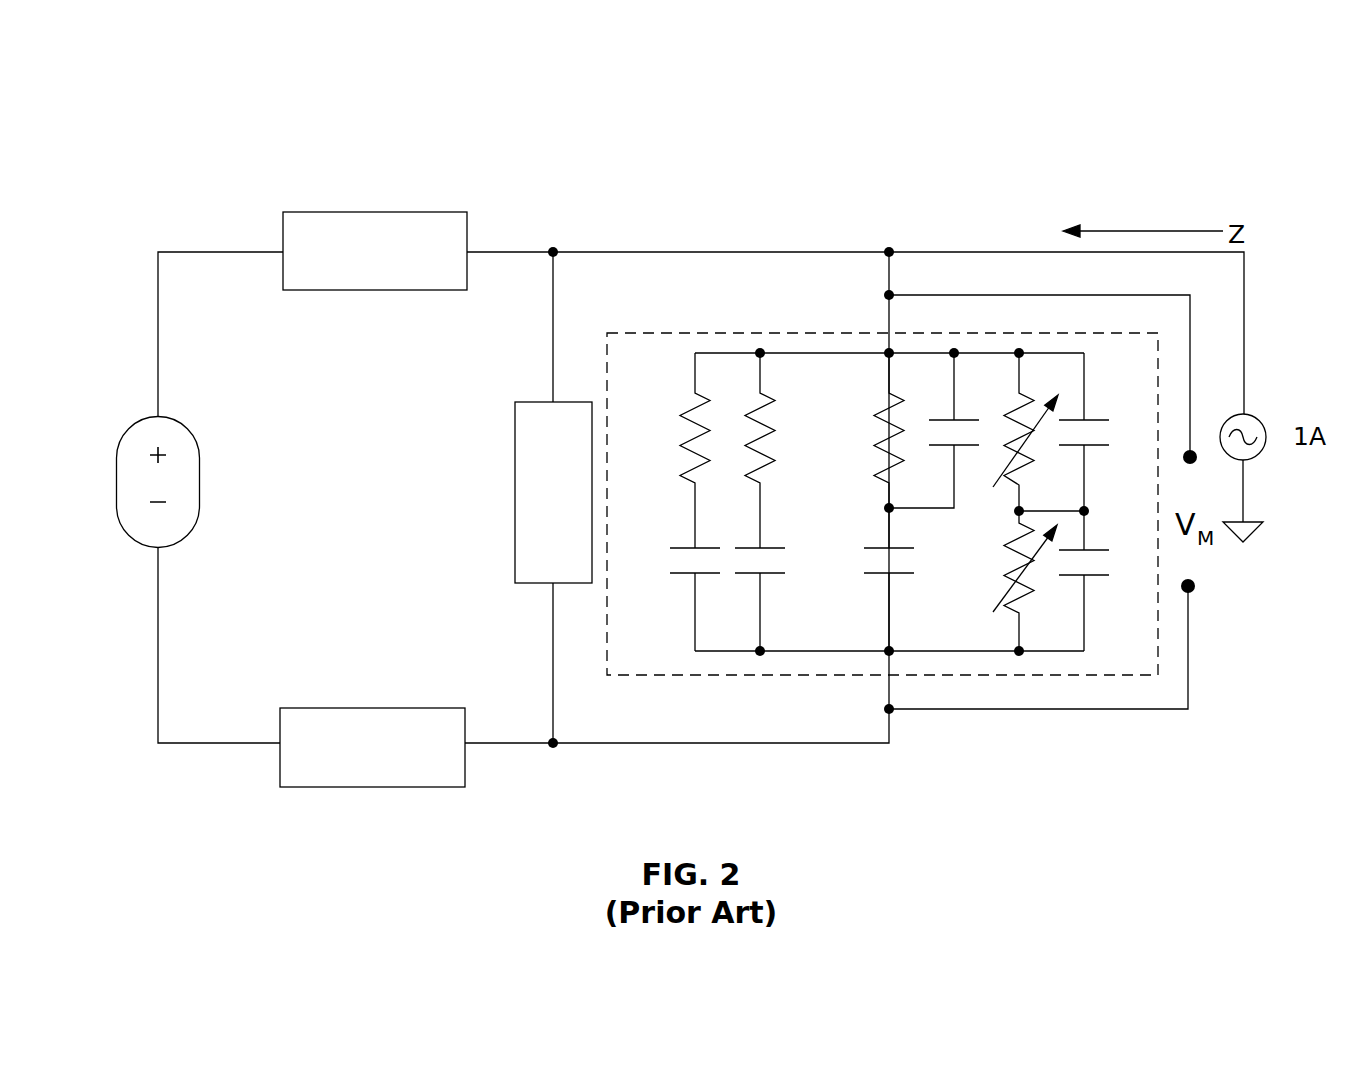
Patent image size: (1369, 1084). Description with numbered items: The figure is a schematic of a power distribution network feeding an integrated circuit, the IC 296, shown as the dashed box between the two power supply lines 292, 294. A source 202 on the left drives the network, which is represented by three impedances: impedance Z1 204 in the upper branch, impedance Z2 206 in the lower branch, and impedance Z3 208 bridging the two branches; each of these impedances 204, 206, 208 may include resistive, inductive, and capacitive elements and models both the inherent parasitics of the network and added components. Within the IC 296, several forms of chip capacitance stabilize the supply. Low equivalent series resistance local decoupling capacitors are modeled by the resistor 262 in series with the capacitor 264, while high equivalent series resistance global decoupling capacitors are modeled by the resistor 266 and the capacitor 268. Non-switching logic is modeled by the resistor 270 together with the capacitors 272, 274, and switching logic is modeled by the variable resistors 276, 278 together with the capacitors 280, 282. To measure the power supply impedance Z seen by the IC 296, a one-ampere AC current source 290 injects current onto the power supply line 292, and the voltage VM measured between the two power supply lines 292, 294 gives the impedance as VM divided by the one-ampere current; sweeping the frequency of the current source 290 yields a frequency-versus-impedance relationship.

The voltage source 202 is at (199, 465).
The impedance Z1 204 is at (406, 212).
The impedance Z2 206 is at (400, 708).
The impedance Z3 208 is at (514, 465).
The resistor 262 is at (683, 416).
The capacitor 264 is at (677, 548).
The resistor 266 is at (762, 396).
The capacitor 268 is at (754, 548).
The resistor 270 is at (877, 416).
The capacitor 272 is at (940, 420).
The capacitor 274 is at (873, 548).
The variable resistor 276 is at (1026, 400).
The variable resistor 278 is at (1002, 600).
The capacitor 280 is at (1090, 420).
The capacitor 282 is at (1092, 550).
The 1 Ampere AC current source 290 is at (1251, 417).
The power supply line 292 is at (1070, 294).
The power supply line 294 is at (1046, 710).
The IC 296 is at (942, 320).